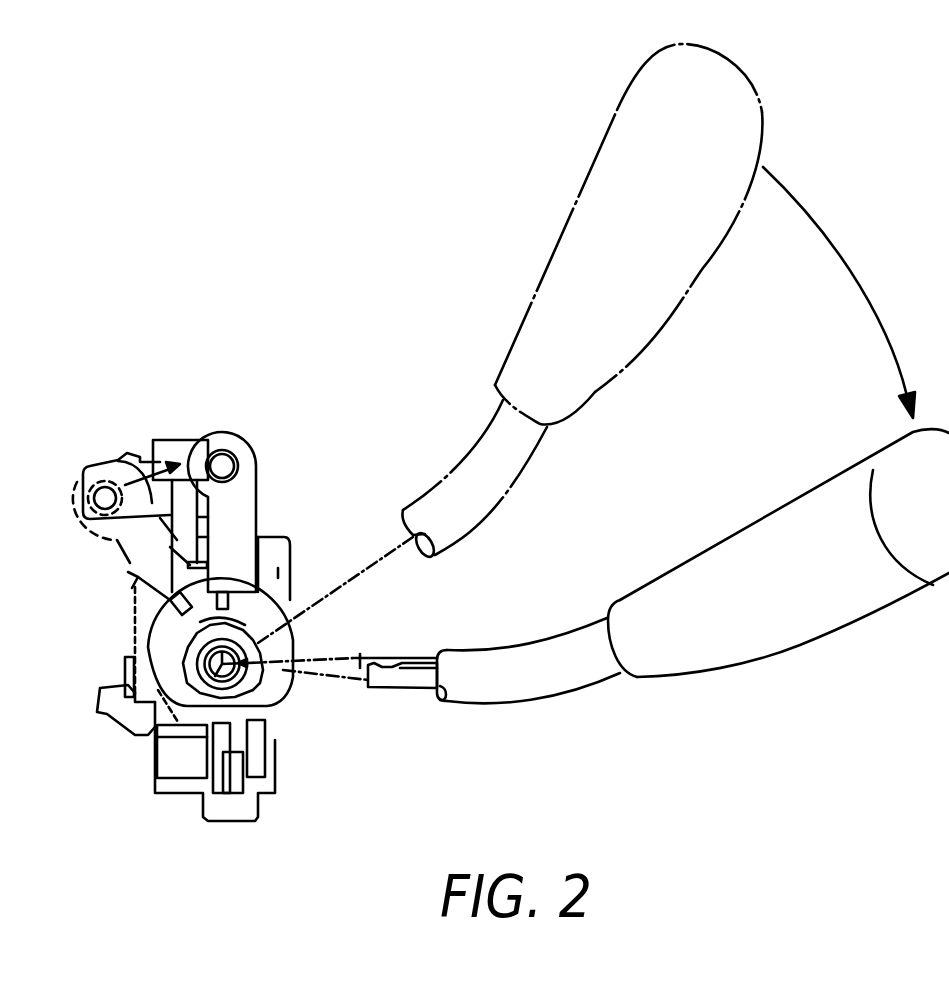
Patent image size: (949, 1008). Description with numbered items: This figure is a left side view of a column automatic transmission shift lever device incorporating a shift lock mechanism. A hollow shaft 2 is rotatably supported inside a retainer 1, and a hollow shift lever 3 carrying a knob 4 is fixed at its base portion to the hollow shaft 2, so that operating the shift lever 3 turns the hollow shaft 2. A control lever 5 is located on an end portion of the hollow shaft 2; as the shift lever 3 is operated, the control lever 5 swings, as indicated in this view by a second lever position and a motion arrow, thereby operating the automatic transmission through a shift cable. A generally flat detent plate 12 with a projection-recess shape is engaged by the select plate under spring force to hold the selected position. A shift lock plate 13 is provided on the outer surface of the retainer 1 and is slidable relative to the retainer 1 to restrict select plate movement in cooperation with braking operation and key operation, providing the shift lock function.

The retainer 1 is at (287, 710).
The hollow shaft 2 is at (258, 638).
The shift lever 3 is at (547, 687).
The knob 4 is at (765, 635).
The control lever 5 is at (248, 465).
The detent plate 12 is at (140, 708).
The shift lock plate 13 is at (160, 537).